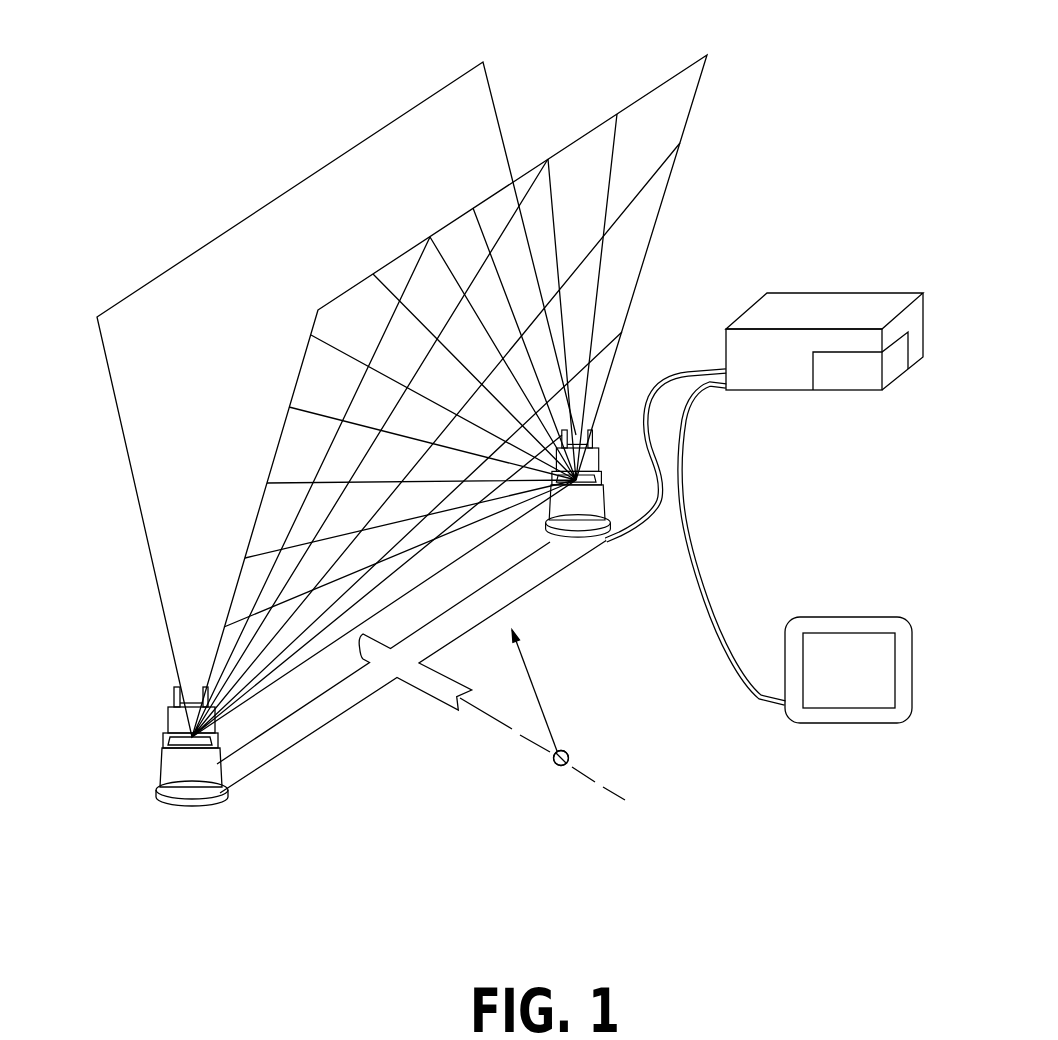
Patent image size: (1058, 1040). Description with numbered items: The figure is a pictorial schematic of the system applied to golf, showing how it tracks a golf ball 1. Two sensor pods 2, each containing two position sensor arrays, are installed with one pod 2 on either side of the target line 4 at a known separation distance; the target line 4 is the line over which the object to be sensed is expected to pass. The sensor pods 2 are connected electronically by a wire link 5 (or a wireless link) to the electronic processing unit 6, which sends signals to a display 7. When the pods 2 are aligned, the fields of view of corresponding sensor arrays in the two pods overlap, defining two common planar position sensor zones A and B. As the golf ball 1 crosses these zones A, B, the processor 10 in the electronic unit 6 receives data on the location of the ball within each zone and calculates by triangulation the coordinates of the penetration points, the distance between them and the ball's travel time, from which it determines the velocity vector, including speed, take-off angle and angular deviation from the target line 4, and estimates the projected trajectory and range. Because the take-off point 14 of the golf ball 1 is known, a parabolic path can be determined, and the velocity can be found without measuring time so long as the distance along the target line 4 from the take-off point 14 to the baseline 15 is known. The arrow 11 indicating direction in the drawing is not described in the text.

The golf ball 1 is at (568, 748).
The sensor pod 2 is at (175, 773).
The target line 4 is at (522, 737).
The wire link 5 is at (667, 377).
The electronic processing unit 6 is at (885, 300).
The display 7 is at (825, 623).
The processor 10 is at (896, 360).
The direction arrow (normal) 11 is at (527, 660).
The take-off point 14 is at (555, 770).
The baseline 15 is at (327, 708).
The planar position sensor zone A is at (237, 223).
The planar position sensor zone B is at (647, 212).